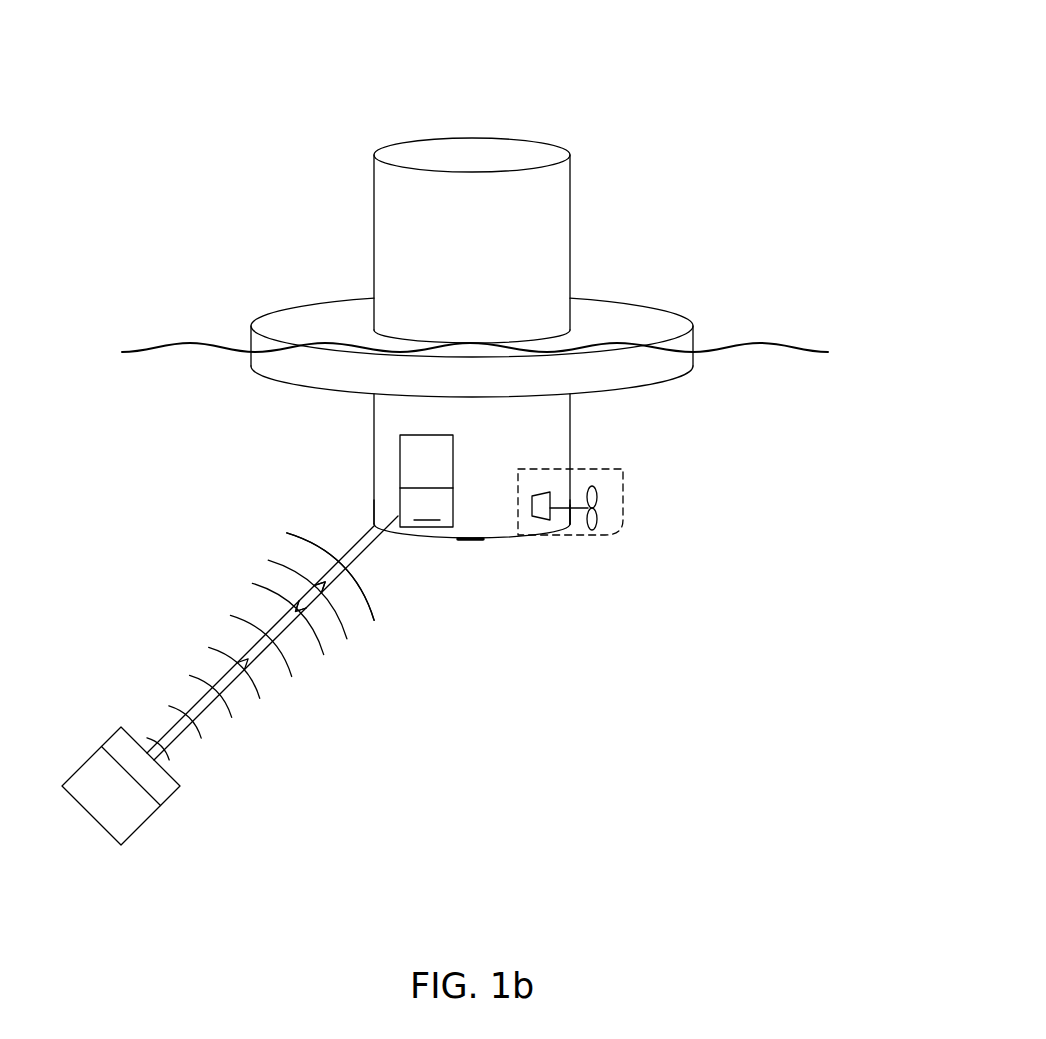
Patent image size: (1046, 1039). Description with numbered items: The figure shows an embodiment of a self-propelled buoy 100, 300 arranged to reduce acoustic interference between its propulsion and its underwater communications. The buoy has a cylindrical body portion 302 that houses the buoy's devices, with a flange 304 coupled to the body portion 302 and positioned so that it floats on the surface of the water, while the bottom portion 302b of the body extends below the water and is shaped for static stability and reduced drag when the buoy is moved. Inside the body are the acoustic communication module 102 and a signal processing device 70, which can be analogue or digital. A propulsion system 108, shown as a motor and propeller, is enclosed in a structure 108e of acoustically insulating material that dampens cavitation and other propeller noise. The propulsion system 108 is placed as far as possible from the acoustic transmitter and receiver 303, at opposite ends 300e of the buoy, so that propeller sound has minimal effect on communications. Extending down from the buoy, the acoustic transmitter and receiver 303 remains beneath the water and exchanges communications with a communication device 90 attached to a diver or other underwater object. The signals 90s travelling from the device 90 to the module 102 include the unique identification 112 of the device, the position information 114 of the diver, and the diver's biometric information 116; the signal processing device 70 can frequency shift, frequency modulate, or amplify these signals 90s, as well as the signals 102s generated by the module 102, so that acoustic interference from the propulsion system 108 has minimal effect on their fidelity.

The buoy 100 is at (635, 98).
The buoy 300 is at (469, 350).
The body portion 302 is at (423, 155).
The flange 304 is at (328, 320).
The bottom portion 302b is at (475, 542).
The opposite ends 300e is at (379, 532).
The acoustic communication module 102 is at (446, 476).
The signal processing device 70 is at (172, 794).
The propulsion system 108 is at (598, 496).
The acoustically isolating structure 108e is at (540, 469).
The acoustic transmitter and receiver 303 is at (362, 538).
The signals 90s is at (307, 580).
The unique identification 112 is at (253, 637).
The position information 114 is at (301, 606).
The biometric information 116 is at (320, 587).
The signals generated from the acoustic communication module 102s is at (330, 590).
The communication device 90 is at (138, 828).